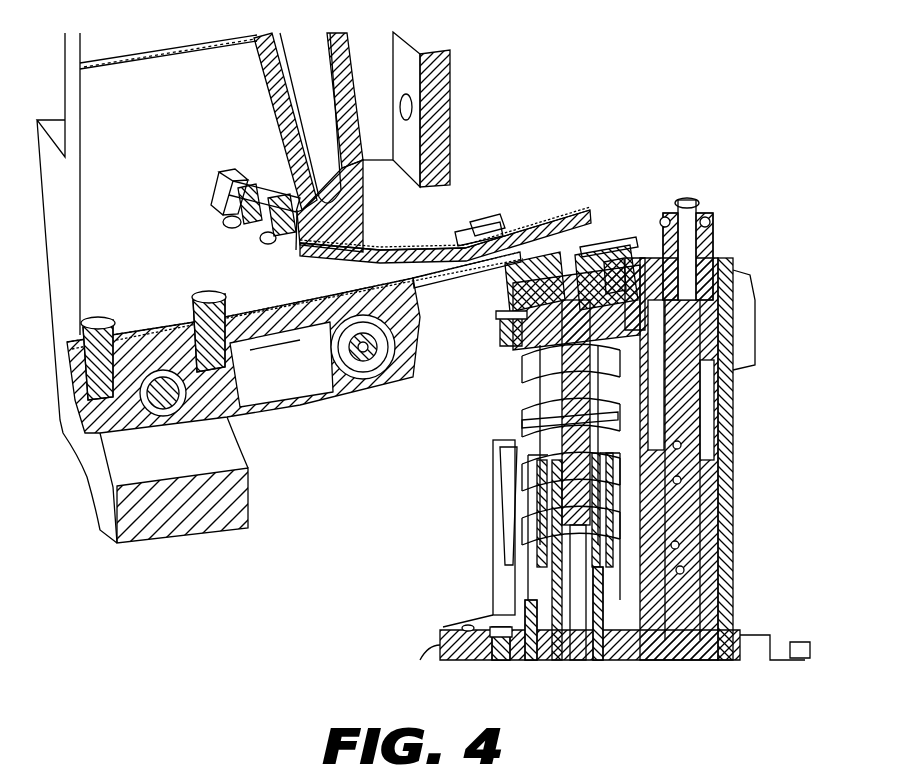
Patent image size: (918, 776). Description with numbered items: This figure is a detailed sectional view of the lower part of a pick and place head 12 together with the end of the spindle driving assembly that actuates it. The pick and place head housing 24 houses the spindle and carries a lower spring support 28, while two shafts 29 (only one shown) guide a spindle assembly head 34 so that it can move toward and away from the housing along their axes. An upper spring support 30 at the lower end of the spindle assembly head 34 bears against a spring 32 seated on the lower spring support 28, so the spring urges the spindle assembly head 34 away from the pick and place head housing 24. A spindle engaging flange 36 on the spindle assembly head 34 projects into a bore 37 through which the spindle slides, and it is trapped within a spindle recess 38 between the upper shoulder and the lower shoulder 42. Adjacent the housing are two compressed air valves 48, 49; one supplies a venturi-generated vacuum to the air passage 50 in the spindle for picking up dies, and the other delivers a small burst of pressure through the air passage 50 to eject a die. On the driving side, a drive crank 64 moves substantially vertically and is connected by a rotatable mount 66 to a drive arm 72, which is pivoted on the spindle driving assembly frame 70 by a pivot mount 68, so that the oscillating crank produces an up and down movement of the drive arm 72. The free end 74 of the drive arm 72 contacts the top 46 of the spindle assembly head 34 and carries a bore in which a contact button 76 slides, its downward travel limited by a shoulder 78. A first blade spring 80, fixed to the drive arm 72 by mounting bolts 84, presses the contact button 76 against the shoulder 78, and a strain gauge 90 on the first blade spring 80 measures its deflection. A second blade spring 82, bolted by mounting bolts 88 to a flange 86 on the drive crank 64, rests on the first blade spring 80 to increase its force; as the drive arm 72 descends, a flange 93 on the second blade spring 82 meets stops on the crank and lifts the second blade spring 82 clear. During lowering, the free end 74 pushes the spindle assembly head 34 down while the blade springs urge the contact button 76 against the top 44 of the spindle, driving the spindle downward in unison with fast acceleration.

The pick and place head 12 is at (398, 556).
The pick and place head housing 24 is at (497, 519).
The lower spring support 28 is at (510, 556).
The shafts 29 is at (515, 424).
The upper spring support 30 is at (512, 358).
The spring 32 is at (505, 476).
The spindle assembly head 34 is at (636, 268).
The spindle engaging flange 36 is at (500, 322).
The bore 37 is at (615, 300).
The spindle recess 38 is at (522, 383).
The lower shoulder 42 is at (528, 416).
The top of the spindle 44 is at (603, 272).
The top of the spindle assembly head 46 is at (614, 280).
The compressed air valve 48 is at (708, 378).
The compressed air valve 49 is at (728, 543).
The air passage 50 is at (580, 652).
The drive crank 64 is at (375, 246).
The rotatable mount 66 is at (362, 378).
The pivot mount 68 is at (180, 428).
The spindle driving assembly frame 70 is at (233, 465).
The drive arm 72 is at (282, 408).
The free end of the drive arm 74 is at (558, 262).
The contact button 76 is at (482, 234).
The shoulder 78 is at (614, 275).
The first blade spring 80 is at (440, 258).
The second blade spring 82 is at (547, 218).
The mounting bolts 84 is at (203, 300).
The flange 86 is at (214, 188).
The mounting bolts 88 is at (268, 245).
The strain gauge 90 is at (293, 336).
The flange 93 is at (487, 222).